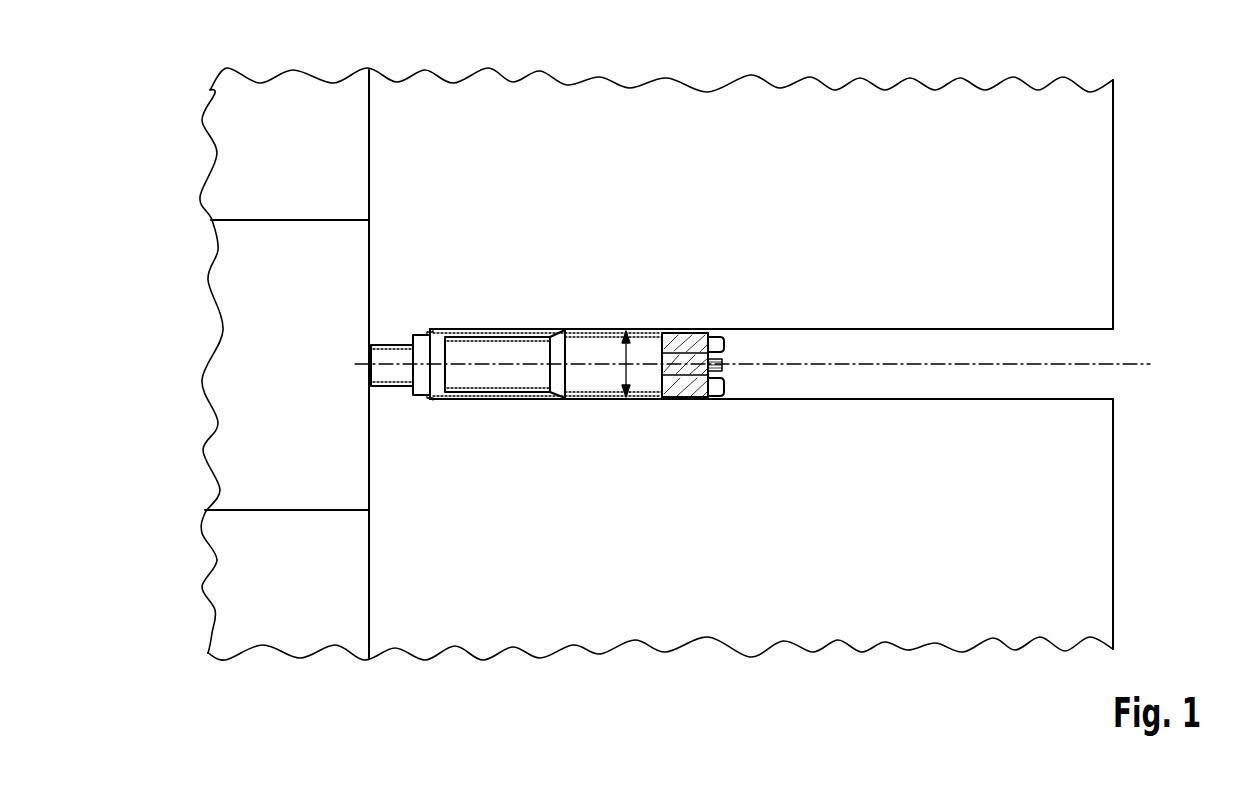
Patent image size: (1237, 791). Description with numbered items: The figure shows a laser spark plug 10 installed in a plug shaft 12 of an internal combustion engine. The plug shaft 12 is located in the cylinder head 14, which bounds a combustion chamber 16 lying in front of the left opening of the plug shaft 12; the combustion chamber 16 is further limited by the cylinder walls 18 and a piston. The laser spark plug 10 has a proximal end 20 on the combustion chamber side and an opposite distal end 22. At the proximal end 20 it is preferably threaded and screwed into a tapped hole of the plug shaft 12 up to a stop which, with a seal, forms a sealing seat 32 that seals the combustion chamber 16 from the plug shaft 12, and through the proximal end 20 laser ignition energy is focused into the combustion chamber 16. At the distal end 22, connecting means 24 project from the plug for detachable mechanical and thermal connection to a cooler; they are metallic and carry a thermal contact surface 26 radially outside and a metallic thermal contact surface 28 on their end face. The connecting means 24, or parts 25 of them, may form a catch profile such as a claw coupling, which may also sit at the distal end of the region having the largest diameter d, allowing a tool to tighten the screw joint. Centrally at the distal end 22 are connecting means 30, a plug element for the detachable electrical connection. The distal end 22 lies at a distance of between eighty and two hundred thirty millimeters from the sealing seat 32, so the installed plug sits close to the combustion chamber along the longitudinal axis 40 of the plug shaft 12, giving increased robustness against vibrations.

The laser spark plug 10 is at (689, 364).
The plug shaft 12 is at (1072, 385).
The cylinder head 14 is at (1095, 527).
The combustion chamber 16 is at (267, 381).
The cylinder walls 18 is at (275, 221).
The proximal end 20 is at (388, 399).
The distal end 22 is at (572, 389).
The connecting means 24 is at (683, 342).
The parts of connecting means 25 is at (712, 396).
The thermal contact surface 26 is at (711, 338).
The metallic thermal contact surface 28 is at (727, 350).
The connecting means for electrical connection 30 is at (722, 364).
The sealing seat 32 is at (418, 325).
The longitudinal axis 40 is at (866, 364).
The largest diameter d is at (626, 350).